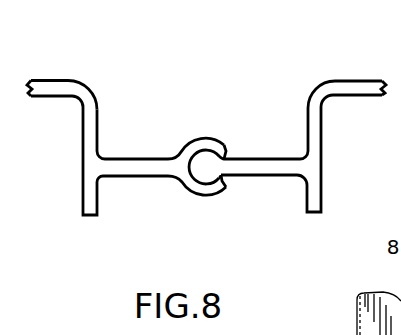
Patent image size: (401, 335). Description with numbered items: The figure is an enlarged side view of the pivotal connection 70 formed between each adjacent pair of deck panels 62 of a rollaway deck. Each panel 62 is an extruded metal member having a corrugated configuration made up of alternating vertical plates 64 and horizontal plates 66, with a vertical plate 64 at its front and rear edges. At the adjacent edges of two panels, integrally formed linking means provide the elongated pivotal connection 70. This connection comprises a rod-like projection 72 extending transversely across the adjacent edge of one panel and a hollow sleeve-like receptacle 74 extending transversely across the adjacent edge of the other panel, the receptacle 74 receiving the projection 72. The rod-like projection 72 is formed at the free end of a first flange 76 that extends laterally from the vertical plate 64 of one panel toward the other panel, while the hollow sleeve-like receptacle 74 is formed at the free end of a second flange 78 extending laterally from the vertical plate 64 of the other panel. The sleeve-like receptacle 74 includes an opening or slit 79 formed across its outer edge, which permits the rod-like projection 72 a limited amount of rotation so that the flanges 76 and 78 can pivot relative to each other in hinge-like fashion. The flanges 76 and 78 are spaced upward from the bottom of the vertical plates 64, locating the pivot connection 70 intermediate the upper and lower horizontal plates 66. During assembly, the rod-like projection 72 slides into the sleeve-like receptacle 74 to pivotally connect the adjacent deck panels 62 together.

The panel 62 is at (91, 88).
The vertical plate 64 is at (90, 137).
The horizontal plate 66 is at (55, 88).
The pivotal connection 70 is at (204, 137).
The rod-like projection 72 is at (217, 180).
The hollow sleeve-like receptacle 74 is at (192, 192).
The first flange 76 is at (265, 168).
The second flange 78 is at (140, 166).
The opening or slit 79 is at (225, 152).